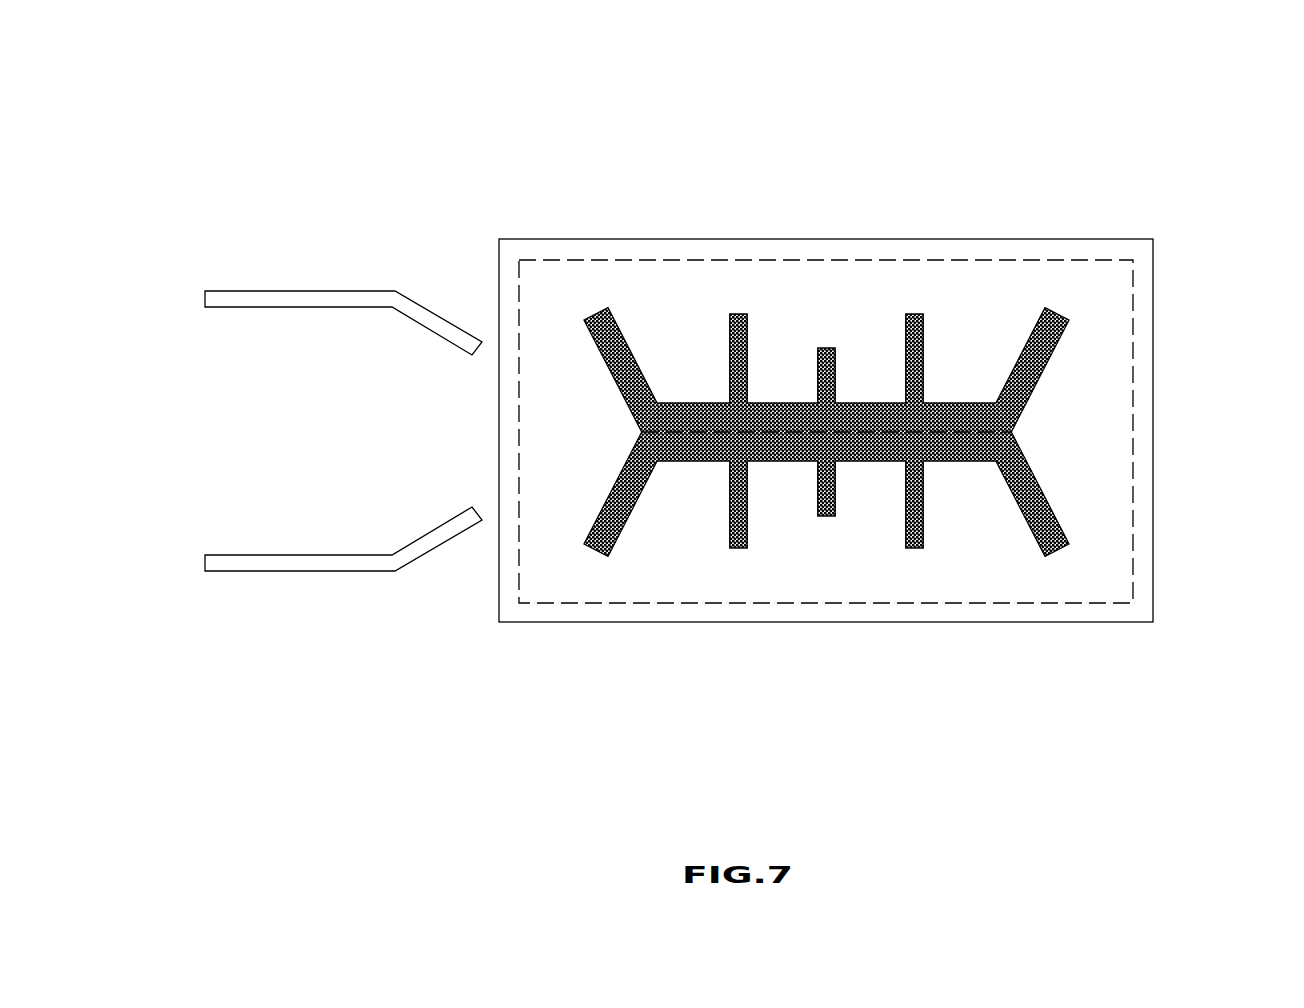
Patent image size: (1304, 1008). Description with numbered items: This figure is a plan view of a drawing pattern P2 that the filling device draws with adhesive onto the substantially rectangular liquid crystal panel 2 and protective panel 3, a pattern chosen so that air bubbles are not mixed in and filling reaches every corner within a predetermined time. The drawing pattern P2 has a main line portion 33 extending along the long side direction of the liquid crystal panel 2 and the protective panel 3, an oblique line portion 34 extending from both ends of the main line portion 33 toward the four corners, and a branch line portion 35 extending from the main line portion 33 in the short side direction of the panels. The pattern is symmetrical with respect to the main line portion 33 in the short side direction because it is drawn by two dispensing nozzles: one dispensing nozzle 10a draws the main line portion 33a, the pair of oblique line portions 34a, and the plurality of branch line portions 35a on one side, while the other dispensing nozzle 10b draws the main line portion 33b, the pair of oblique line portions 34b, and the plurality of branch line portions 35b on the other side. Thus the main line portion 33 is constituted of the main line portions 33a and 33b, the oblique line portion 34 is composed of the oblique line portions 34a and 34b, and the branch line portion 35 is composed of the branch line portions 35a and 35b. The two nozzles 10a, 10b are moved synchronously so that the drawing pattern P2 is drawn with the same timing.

The drawing pattern P2 is at (867, 164).
The liquid crystal panel 2 is at (1133, 311).
The protective panel 3 is at (1153, 436).
The one dispensing nozzle 10a is at (333, 300).
The other dispensing nozzle 10b is at (333, 561).
The main line portion 33 is at (826, 431).
The main line portion 33a is at (781, 420).
The main line portion 33b is at (955, 442).
The oblique line portion 34 is at (912, 433).
The oblique line portion 34a is at (618, 355).
The oblique line portion 34b is at (618, 505).
The branch line portion 35 is at (835, 454).
The branch line portion 35a is at (738, 327).
The branch line portion 35b is at (736, 533).